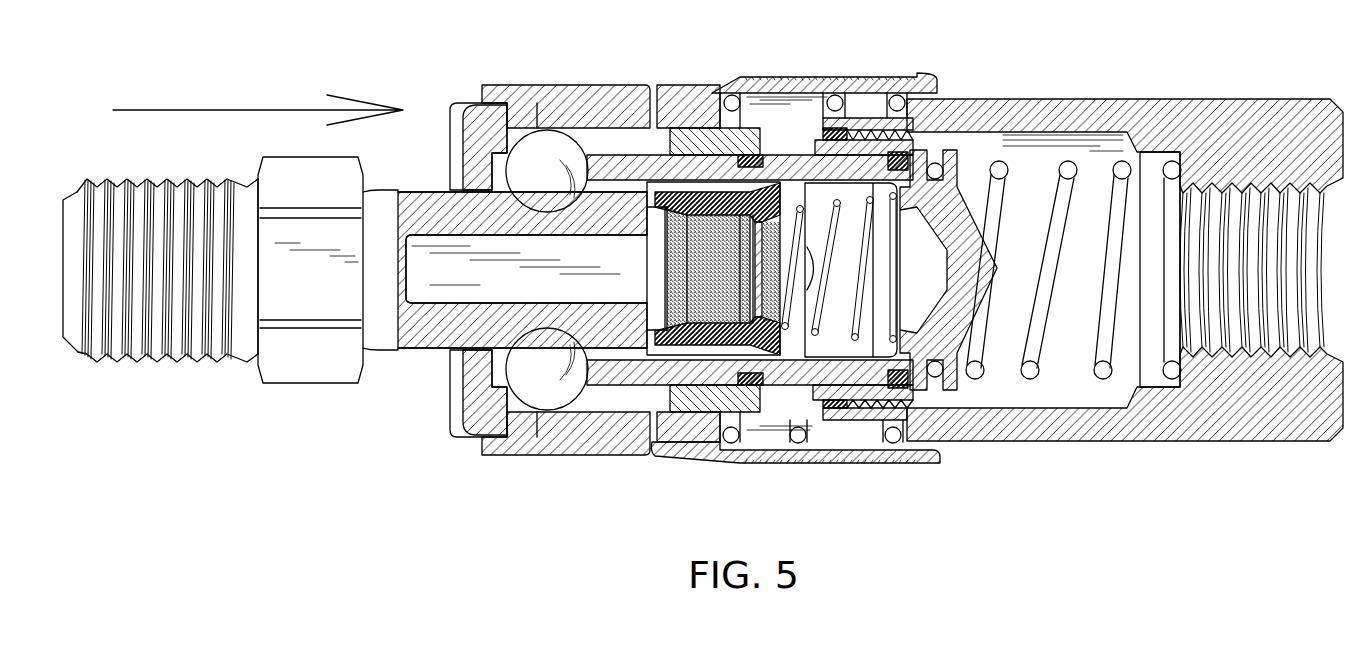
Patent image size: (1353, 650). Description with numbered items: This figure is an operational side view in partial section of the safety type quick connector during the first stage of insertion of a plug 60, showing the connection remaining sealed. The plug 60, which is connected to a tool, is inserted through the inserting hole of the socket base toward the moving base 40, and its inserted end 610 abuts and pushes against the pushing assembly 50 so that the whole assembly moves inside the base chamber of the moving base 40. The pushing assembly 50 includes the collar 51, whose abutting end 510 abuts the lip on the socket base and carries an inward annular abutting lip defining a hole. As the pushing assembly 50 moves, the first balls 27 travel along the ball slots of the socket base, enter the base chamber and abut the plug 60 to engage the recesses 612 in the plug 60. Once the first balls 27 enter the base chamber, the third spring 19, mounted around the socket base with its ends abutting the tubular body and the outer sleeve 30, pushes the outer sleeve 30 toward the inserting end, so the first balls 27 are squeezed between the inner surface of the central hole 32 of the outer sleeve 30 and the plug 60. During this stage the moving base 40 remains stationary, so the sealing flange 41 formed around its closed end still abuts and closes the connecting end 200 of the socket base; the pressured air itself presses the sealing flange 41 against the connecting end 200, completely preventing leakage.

The third spring 19 is at (836, 95).
The first ball 27 is at (573, 148).
The outer sleeve 30 is at (592, 62).
The central hole 32 is at (655, 124).
The moving base 40 is at (1010, 300).
The sealing flange 41 is at (922, 156).
The pushing assembly 50 is at (794, 351).
The collar 51 is at (737, 350).
The plug 60 is at (327, 398).
The connecting end 200 is at (920, 126).
The abutting end 510 is at (650, 340).
The inserted end 610 is at (657, 322).
The recess 612 is at (537, 130).